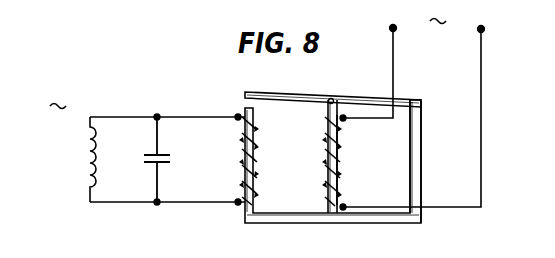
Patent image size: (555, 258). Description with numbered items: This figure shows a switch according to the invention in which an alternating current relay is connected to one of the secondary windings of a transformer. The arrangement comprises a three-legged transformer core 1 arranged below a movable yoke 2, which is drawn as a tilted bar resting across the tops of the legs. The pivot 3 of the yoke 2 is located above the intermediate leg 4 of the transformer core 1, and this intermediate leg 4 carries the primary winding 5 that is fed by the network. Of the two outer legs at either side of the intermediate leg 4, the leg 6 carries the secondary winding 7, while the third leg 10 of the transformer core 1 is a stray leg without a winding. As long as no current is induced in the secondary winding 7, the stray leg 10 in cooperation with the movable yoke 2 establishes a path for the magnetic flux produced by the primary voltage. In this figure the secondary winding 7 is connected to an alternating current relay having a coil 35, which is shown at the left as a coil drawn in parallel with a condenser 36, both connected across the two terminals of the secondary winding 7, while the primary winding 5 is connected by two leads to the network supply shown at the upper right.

The transformer core 1 is at (305, 218).
The movable yoke 2 is at (297, 98).
The pivot 3 is at (332, 98).
The intermediate leg 4 is at (332, 193).
The primary winding 5 is at (337, 165).
The leg 6 is at (257, 117).
The secondary winding 7 is at (243, 160).
The third leg 10 is at (417, 173).
The coil 35 is at (83, 143).
The condenser 36 is at (143, 162).